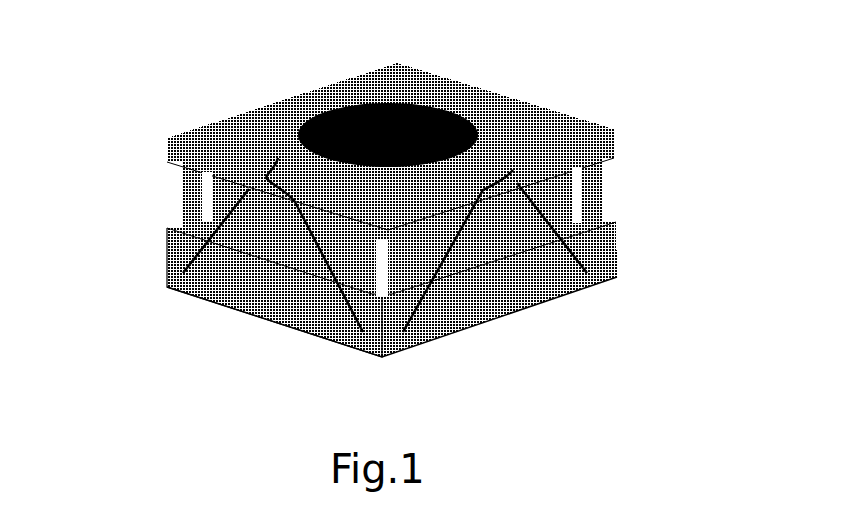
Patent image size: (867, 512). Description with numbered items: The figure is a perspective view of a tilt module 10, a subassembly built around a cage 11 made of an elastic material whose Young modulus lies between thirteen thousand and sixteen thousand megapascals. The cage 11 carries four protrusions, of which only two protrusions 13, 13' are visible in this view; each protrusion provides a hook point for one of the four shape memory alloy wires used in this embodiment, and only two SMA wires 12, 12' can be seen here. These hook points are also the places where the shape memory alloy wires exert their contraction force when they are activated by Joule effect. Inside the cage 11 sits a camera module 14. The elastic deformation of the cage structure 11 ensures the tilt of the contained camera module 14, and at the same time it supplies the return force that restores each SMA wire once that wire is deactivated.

The tilt module 10 is at (467, 210).
The cage 11 is at (328, 338).
The SMA wire 12 is at (137, 191).
The SMA wire 12' is at (597, 260).
The protrusion 13 is at (273, 206).
The protrusion 13' is at (506, 197).
The camera module 14 is at (280, 326).